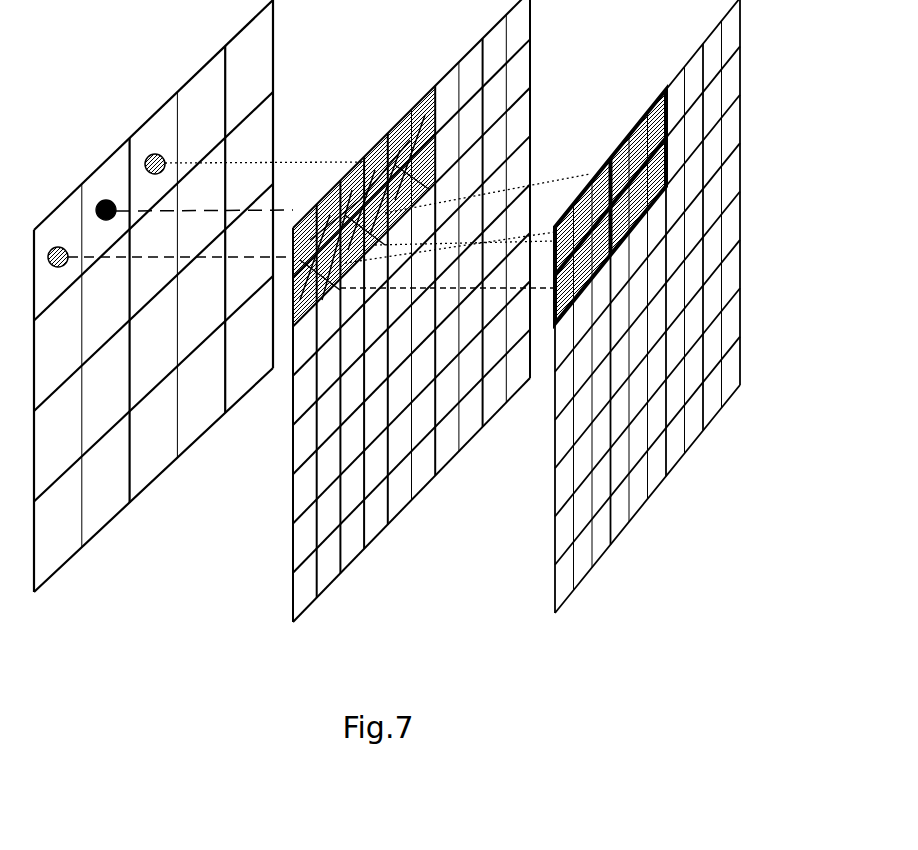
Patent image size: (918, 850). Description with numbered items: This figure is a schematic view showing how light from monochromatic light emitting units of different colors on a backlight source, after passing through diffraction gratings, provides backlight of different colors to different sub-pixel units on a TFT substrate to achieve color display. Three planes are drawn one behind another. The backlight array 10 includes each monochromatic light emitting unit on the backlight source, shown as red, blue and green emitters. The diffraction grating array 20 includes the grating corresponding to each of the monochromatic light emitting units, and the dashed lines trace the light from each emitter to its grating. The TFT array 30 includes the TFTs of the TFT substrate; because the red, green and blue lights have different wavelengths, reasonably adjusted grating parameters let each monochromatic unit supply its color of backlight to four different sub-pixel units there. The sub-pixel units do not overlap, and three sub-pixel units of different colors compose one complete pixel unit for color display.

The backlight array 10 is at (198, 330).
The diffraction grating array 20 is at (441, 329).
The TFT array 30 is at (639, 330).